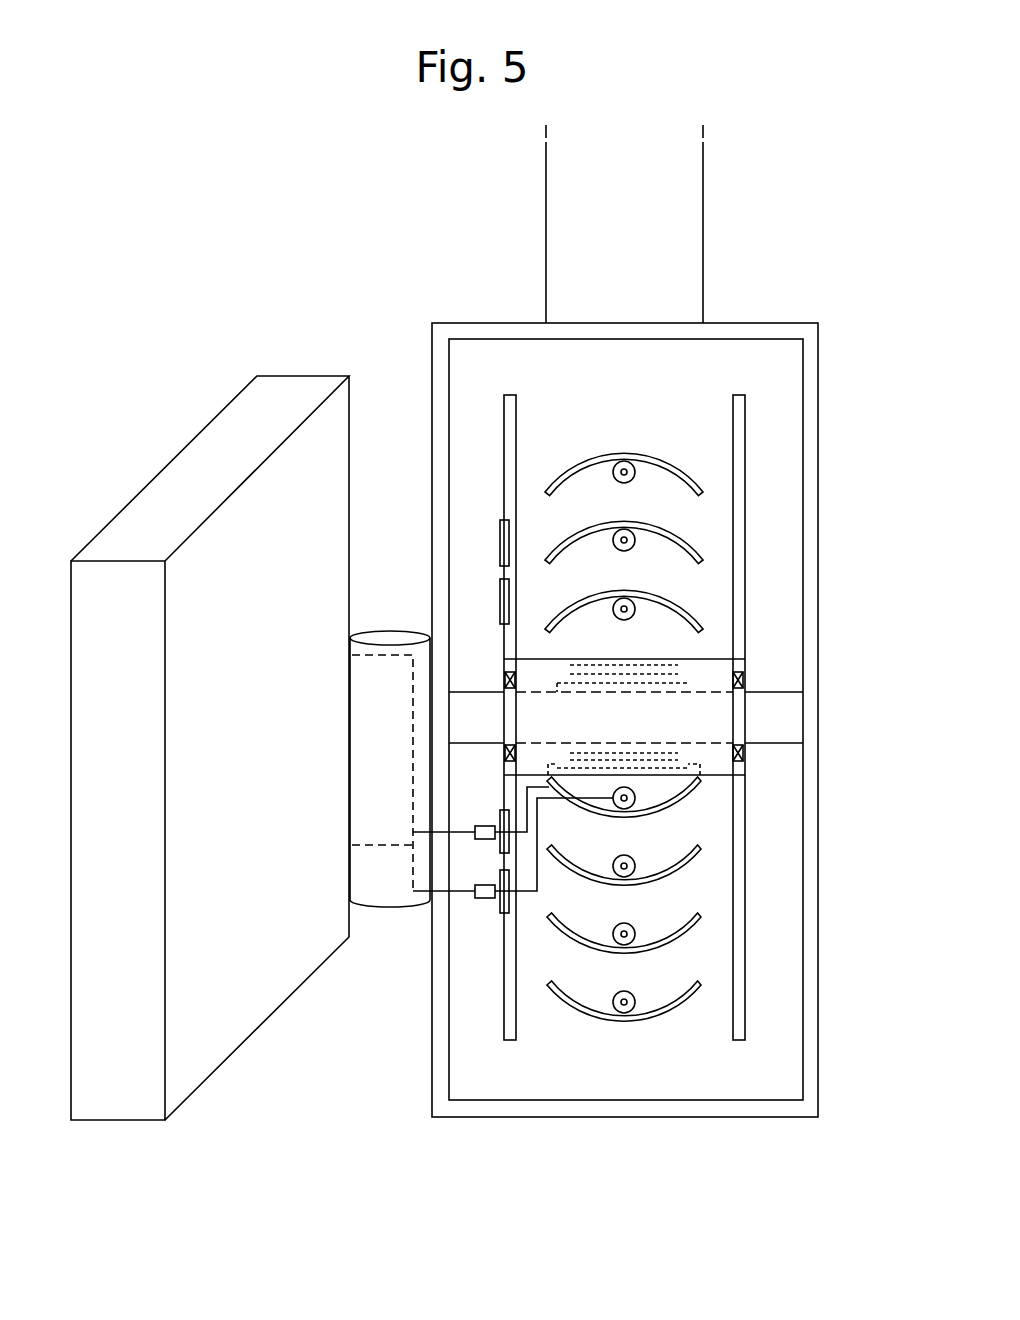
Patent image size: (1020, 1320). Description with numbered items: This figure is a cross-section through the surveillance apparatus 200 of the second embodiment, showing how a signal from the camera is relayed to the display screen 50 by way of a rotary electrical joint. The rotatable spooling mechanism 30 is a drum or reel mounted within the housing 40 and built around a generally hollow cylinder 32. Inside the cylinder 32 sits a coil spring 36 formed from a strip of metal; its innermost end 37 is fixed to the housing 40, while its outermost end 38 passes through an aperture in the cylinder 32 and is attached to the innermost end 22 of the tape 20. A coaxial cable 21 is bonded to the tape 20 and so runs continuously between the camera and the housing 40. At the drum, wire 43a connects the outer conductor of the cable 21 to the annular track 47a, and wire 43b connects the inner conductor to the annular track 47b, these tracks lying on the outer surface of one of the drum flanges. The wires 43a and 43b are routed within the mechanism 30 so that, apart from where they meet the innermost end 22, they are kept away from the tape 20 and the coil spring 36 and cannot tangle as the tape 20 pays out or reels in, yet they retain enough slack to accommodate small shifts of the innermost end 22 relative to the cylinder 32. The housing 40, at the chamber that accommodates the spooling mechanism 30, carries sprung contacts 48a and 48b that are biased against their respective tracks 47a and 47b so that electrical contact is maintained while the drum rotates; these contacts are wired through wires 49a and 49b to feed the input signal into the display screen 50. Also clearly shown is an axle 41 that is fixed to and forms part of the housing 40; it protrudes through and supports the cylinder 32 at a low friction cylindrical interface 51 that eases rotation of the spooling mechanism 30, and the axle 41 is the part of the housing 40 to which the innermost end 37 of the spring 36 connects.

The surveillance apparatus 200 is at (265, 250).
The tape 20 is at (680, 217).
The coaxial cable 21 is at (624, 609).
The innermost end of the tape 22 is at (690, 802).
The rotatable spooling mechanism 30 is at (628, 1045).
The hollow cylinder 32 is at (550, 658).
The coil spring 36 is at (675, 759).
The innermost end of the coil spring 37 is at (687, 684).
The outermost end of the coil spring 38 is at (700, 768).
The housing 40 is at (753, 1117).
The axle 41 is at (775, 715).
The wire 43a is at (520, 836).
The wire 43b is at (537, 817).
The annular track 47a is at (503, 848).
The annular track 47b is at (503, 913).
The sprung contact 48a is at (487, 826).
The sprung contact 48b is at (484, 899).
The wire 49a is at (378, 652).
The wire 49b is at (378, 840).
The display screen 50 is at (218, 1020).
The low friction cylindrical interface 51 is at (505, 680).